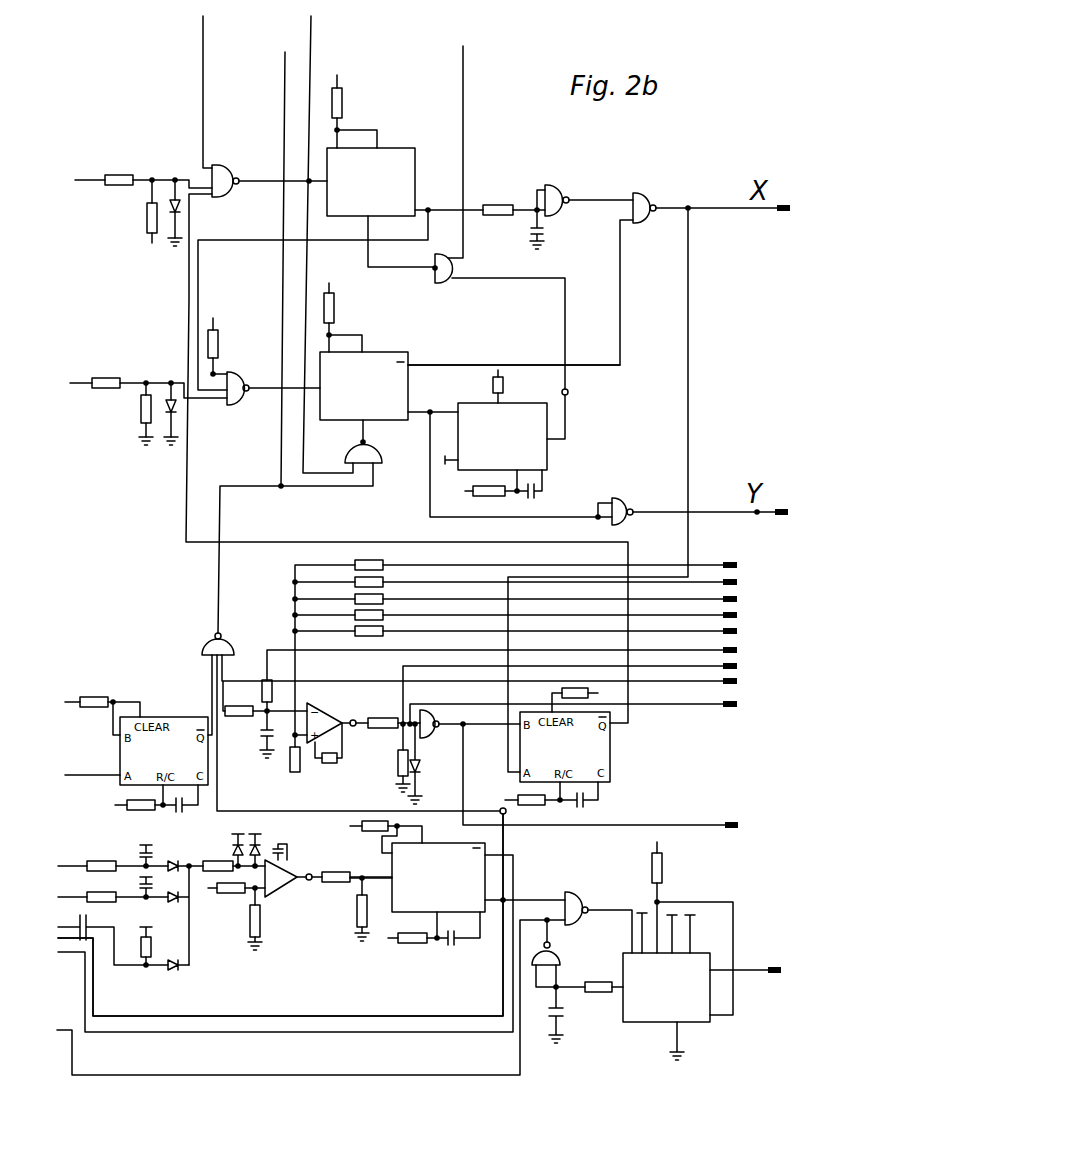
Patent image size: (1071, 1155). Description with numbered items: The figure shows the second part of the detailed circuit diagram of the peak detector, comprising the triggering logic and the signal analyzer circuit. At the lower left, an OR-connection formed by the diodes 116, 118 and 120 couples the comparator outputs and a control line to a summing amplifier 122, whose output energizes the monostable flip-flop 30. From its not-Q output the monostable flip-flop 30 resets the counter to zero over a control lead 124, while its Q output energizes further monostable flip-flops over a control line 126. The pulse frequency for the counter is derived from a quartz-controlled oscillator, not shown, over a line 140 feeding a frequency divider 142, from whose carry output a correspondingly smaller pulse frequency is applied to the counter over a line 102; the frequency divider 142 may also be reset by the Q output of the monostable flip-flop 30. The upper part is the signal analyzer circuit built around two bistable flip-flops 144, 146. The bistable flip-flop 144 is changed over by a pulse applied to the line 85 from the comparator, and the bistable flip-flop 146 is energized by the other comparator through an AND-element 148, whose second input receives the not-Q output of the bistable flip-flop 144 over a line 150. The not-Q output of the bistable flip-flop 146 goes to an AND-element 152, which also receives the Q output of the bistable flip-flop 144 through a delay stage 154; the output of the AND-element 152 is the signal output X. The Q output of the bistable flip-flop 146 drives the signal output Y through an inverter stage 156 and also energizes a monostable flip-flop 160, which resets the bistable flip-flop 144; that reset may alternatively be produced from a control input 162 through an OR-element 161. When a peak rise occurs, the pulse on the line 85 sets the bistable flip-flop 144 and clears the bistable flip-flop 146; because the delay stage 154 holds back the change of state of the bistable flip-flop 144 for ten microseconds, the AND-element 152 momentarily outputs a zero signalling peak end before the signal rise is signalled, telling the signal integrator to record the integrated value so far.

The line 85 is at (245, 180).
The bistable flip-flop 144 is at (383, 156).
The control input 162 is at (465, 148).
The delay stage 154 is at (552, 191).
The AND-element 152 is at (638, 193).
The OR-element 161 is at (449, 256).
The line 150 is at (246, 240).
The AND-element 148 is at (236, 381).
The bistable flip-flop 146 is at (378, 363).
The monostable flip-flop 160 is at (548, 410).
The inverter stage 156 is at (612, 499).
The monostable flip-flop 30 is at (393, 868).
The diode 116 is at (171, 863).
The diode 118 is at (178, 889).
The diode 120 is at (178, 956).
The summing amplifier 122 is at (282, 882).
The control line 126 is at (250, 1016).
The control lead 124 is at (166, 1032).
The line 102 is at (57, 1038).
The line 140 is at (742, 970).
The frequency divider 142 is at (638, 1025).